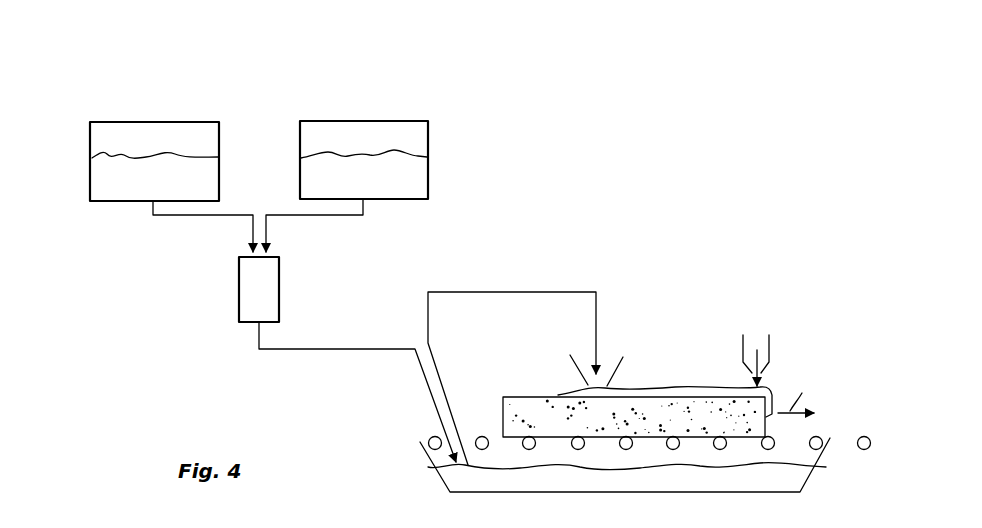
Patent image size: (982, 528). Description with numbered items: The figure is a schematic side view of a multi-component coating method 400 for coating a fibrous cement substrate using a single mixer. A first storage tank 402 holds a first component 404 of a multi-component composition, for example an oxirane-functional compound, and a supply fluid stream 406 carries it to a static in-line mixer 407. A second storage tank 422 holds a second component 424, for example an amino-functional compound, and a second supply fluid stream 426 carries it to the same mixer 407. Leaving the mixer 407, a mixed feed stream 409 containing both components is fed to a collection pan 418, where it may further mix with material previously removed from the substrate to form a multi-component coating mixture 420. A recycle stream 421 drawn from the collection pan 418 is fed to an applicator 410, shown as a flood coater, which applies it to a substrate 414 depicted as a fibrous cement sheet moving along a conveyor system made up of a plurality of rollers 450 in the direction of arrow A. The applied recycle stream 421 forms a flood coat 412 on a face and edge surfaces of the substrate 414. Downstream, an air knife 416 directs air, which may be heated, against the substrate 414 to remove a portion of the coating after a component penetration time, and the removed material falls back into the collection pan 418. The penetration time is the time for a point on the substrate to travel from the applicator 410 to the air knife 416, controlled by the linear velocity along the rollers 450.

The multi-component coating method 400 is at (258, 82).
The first storage tank 402 is at (109, 121).
The first component 404 is at (103, 158).
The supply fluid stream 406 is at (197, 215).
The mixer 407 is at (280, 290).
The mixed feed stream 409 is at (306, 350).
The applicator 410 is at (618, 368).
The flood coat 412 is at (676, 388).
The substrate 414 is at (530, 397).
The air knife 416 is at (770, 348).
The collection pan 418 is at (815, 463).
The multi-component coating mixture 420 is at (452, 463).
The recycle stream 421 is at (490, 292).
The second storage tank 422 is at (410, 121).
The second component 424 is at (415, 158).
The supply fluid stream 426 is at (320, 215).
The plurality of rollers 450 is at (860, 435).